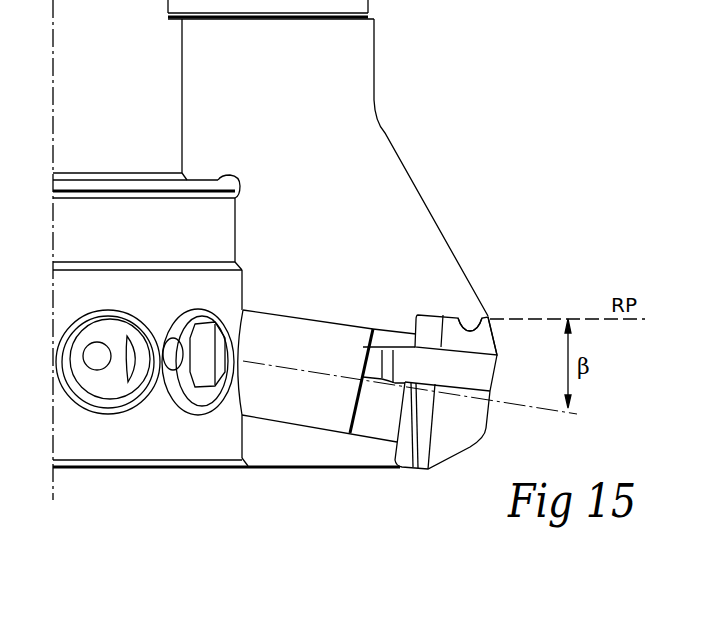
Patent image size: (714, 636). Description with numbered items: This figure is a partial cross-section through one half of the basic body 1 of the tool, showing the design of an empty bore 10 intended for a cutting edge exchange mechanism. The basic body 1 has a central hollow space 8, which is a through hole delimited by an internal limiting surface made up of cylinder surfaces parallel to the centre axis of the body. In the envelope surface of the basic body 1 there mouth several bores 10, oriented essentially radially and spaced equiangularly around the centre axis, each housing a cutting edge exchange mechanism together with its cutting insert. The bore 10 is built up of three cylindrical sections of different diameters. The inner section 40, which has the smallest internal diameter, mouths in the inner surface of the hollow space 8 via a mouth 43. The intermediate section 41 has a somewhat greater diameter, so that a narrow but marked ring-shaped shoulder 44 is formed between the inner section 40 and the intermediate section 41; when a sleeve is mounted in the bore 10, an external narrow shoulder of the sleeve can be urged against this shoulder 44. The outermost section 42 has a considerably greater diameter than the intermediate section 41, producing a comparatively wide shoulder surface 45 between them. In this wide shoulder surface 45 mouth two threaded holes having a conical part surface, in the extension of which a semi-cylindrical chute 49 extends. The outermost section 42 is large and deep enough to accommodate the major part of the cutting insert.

The basic body 1 is at (412, 160).
The central hollow space 8 is at (143, 437).
The bore 10 is at (370, 390).
The inner section 40 is at (302, 385).
The intermediate section 41 is at (399, 333).
The outermost section 42 is at (478, 323).
The mouth 43 is at (240, 400).
The ring-shaped shoulder 44 is at (372, 331).
The shoulder surface 45 is at (430, 320).
The chute 49 is at (468, 373).